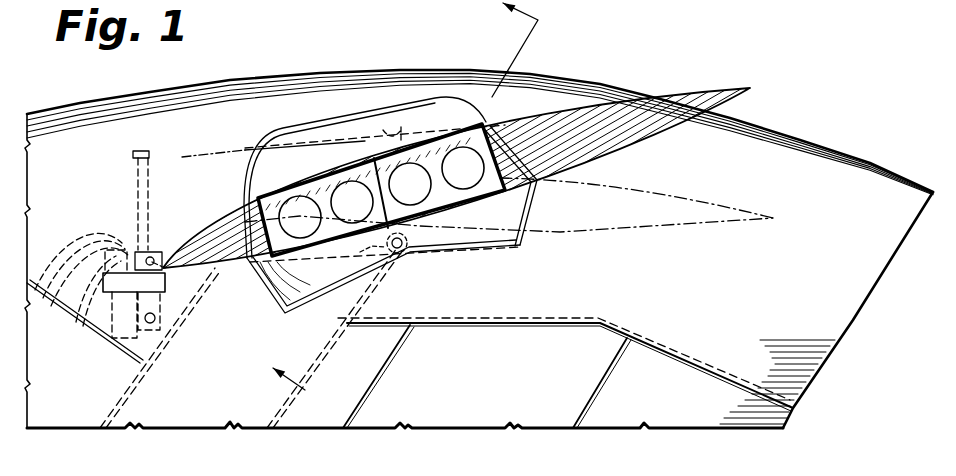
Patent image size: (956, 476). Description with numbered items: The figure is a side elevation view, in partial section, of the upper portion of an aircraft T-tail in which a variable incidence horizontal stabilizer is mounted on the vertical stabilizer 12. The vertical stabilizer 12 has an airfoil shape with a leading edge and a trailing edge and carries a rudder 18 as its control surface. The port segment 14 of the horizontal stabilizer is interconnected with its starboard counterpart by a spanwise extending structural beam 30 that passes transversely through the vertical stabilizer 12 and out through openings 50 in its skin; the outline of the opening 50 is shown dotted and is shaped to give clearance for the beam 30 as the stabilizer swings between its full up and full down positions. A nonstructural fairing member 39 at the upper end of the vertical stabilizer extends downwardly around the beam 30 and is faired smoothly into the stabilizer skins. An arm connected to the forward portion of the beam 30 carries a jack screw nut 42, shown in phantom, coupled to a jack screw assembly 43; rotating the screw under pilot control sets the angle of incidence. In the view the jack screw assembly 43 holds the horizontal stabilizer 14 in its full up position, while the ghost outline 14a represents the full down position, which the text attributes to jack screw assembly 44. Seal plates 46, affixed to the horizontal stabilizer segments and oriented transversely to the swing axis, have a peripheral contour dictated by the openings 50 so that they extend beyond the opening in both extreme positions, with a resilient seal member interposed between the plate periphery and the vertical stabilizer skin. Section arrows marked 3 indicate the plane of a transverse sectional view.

The vertical stabilizer 12 is at (251, 66).
The port segment of horizontal stabilizer 14 is at (553, 110).
The wing in stowed position 14a is at (700, 191).
The rudder 18 is at (720, 411).
The interconnecting horizontal structural beam 30 is at (437, 203).
The nonstructural fairing member 39 is at (852, 325).
The jack screw nut 42 is at (136, 240).
The jack screw assembly 43 is at (108, 340).
The jack screw assembly 44 is at (520, 241).
The seal plate 46 is at (420, 115).
The opening 50 is at (401, 127).
The section line for FIG. 3 is at (416, 207).